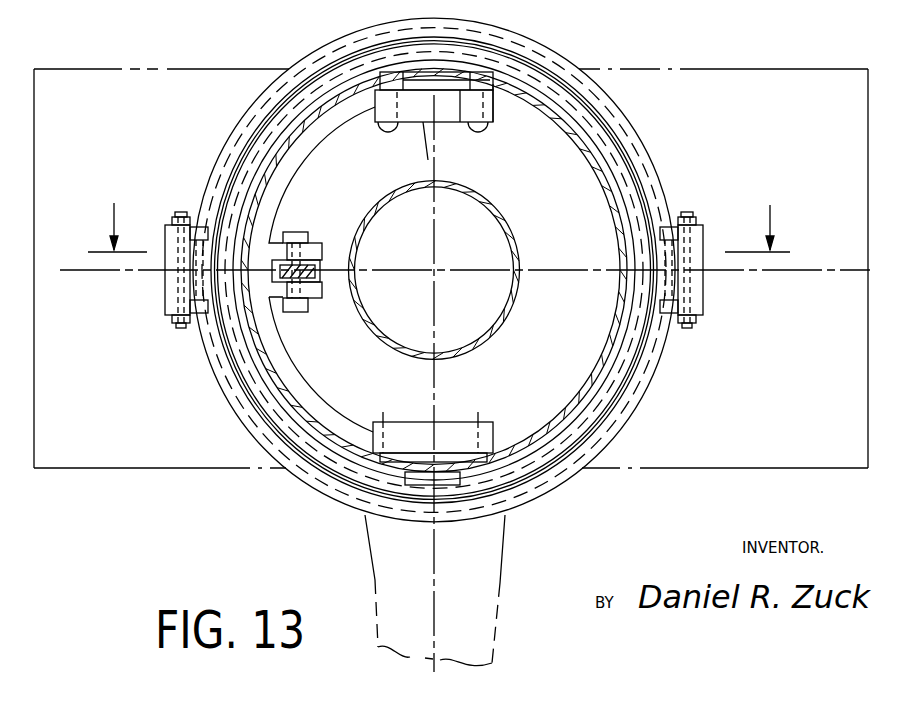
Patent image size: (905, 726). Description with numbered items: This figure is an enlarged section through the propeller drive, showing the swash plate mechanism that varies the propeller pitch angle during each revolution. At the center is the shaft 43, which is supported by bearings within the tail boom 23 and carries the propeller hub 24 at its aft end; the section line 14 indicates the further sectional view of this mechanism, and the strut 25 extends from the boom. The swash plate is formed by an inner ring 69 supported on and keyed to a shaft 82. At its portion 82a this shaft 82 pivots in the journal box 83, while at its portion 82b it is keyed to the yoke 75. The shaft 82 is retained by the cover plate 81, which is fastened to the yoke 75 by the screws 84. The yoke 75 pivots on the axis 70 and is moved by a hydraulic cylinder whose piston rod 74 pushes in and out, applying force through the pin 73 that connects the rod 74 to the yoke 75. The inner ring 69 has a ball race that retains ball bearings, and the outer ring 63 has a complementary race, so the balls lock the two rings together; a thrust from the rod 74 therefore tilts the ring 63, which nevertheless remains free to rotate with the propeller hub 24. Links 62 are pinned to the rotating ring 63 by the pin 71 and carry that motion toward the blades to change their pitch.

The section line 14- 14 is at (439, 213).
The tail boom 23 is at (625, 281).
The propeller hub 24 is at (778, 69).
The support strut 25 is at (482, 575).
The shaft 43 is at (512, 233).
The links 62 is at (165, 285).
The ring 63 is at (667, 343).
The ring 69 is at (617, 163).
The axis 70 is at (435, 413).
The pin 71 is at (177, 330).
The pin 73 is at (295, 237).
The rod 74 is at (320, 272).
The yoke 75 is at (300, 162).
The cover plate 81 is at (427, 153).
The shaft 82 is at (451, 54).
The shaft pivot portion 82a is at (499, 84).
The shaft keyed portion 82b is at (470, 108).
The journal box 83 is at (423, 70).
The screws 84 is at (384, 132).